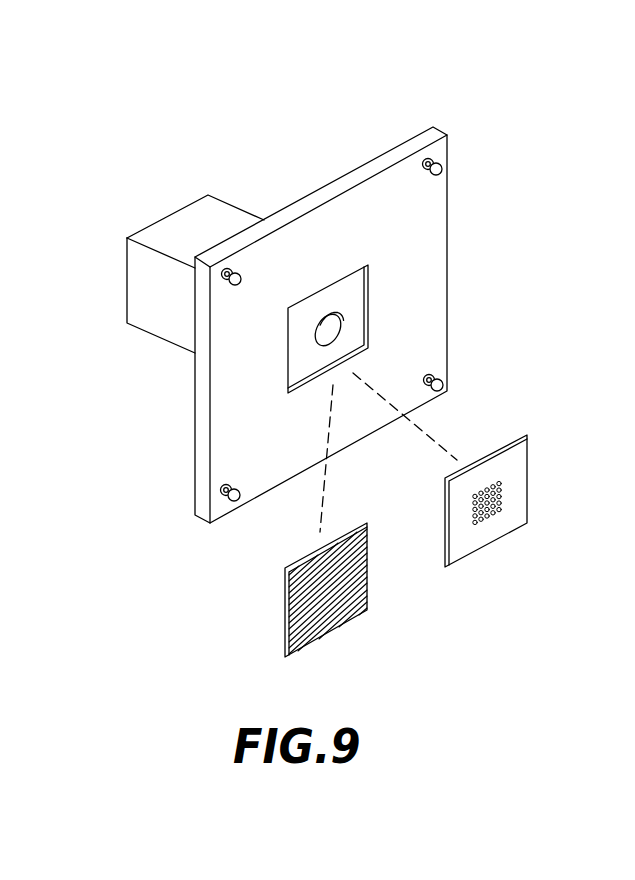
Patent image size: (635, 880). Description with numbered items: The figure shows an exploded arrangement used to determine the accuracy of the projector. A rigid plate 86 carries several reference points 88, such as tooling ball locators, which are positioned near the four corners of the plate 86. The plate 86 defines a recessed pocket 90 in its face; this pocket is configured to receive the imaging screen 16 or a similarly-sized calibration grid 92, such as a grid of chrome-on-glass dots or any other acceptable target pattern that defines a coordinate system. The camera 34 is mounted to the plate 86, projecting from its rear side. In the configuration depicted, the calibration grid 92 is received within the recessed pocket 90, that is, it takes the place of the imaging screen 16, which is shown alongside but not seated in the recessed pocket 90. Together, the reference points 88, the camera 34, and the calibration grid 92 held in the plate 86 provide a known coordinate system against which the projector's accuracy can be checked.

The imaging screen 16 is at (365, 628).
The camera 34 is at (237, 203).
The rigid plate 86 is at (178, 413).
The reference points 88 is at (442, 168).
The recessed pocket 90 is at (372, 308).
The calibration grid 92 is at (537, 479).